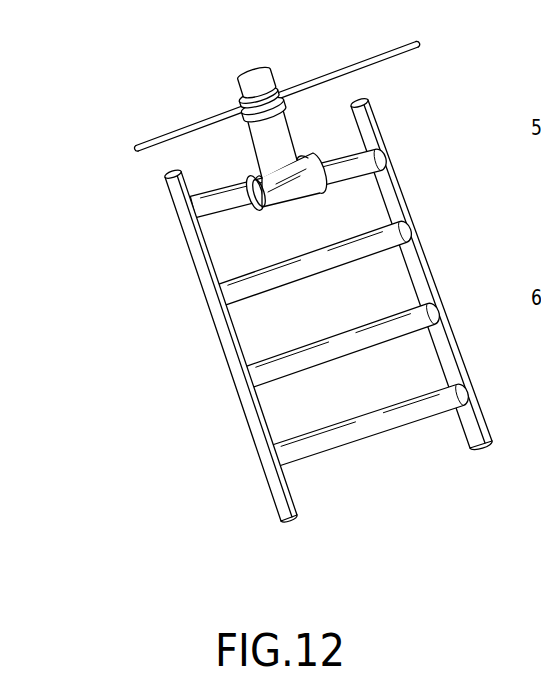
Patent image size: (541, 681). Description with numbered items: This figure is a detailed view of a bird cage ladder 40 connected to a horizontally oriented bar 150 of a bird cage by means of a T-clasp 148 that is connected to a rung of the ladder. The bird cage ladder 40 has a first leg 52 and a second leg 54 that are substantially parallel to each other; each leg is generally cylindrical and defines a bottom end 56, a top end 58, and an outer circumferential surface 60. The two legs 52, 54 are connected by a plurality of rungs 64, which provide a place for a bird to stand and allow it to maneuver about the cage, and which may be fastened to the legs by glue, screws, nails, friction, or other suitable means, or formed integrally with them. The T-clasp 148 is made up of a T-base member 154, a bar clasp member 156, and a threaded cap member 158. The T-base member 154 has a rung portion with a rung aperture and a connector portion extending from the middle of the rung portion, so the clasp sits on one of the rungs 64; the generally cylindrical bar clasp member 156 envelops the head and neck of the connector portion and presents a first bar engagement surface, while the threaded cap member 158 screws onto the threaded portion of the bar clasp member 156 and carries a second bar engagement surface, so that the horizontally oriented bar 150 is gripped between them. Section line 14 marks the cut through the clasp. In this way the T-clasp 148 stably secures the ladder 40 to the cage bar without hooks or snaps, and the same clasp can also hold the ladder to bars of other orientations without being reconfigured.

The section line 14- 14 is at (130, 153).
The bird cage ladder 40 is at (206, 396).
The first leg 52 is at (204, 311).
The second leg 54 is at (403, 192).
The bottom end 56 is at (296, 522).
The top end 58 is at (373, 112).
The outer circumferential surface 60 is at (428, 297).
The rungs 64 is at (350, 265).
The T-clasp 148 is at (236, 143).
The horizontally oriented bar 150 is at (152, 146).
The T-base member 154 is at (278, 204).
The bar clasp member 156 is at (300, 108).
The threaded cap member 158 is at (238, 80).